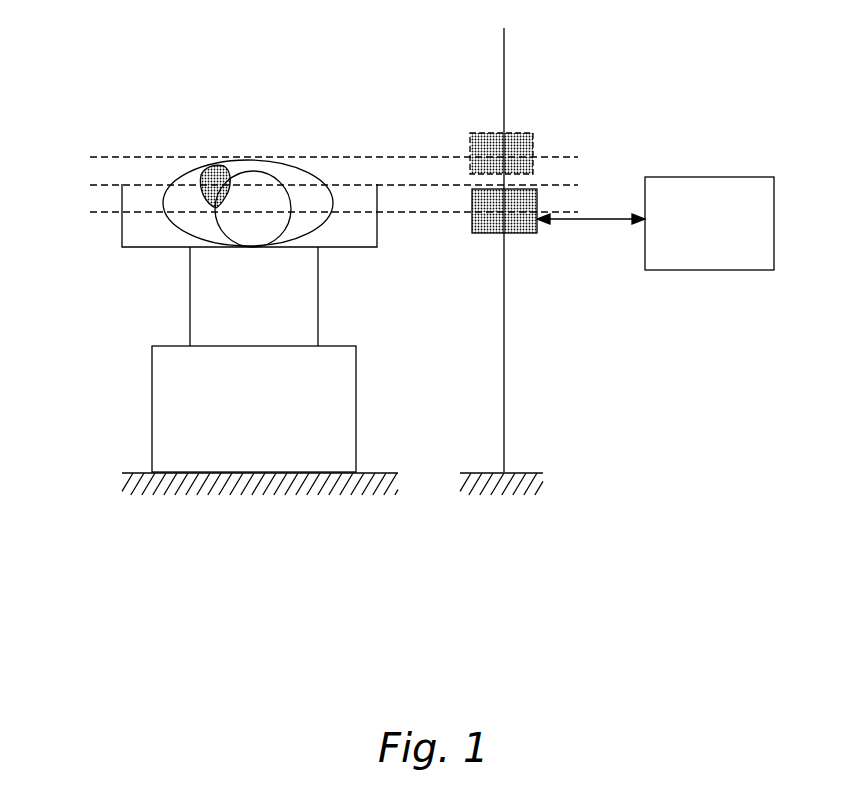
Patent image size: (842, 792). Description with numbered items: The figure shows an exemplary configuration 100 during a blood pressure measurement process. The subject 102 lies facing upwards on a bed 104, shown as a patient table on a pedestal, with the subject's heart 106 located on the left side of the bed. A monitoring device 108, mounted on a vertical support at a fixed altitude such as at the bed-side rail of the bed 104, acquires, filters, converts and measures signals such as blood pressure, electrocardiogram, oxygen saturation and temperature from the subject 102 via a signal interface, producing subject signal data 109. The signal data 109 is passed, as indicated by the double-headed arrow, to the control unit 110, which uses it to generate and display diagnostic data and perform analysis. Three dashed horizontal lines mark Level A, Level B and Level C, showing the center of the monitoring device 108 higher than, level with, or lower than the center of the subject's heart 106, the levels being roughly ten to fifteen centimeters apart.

The configuration 100 is at (445, 601).
The subject 102 is at (281, 164).
The bed 104 is at (195, 320).
The subject's heart 106 is at (217, 168).
The monitoring device 108 is at (525, 198).
The subject signal data 109 is at (583, 222).
The control unit 110 is at (725, 188).